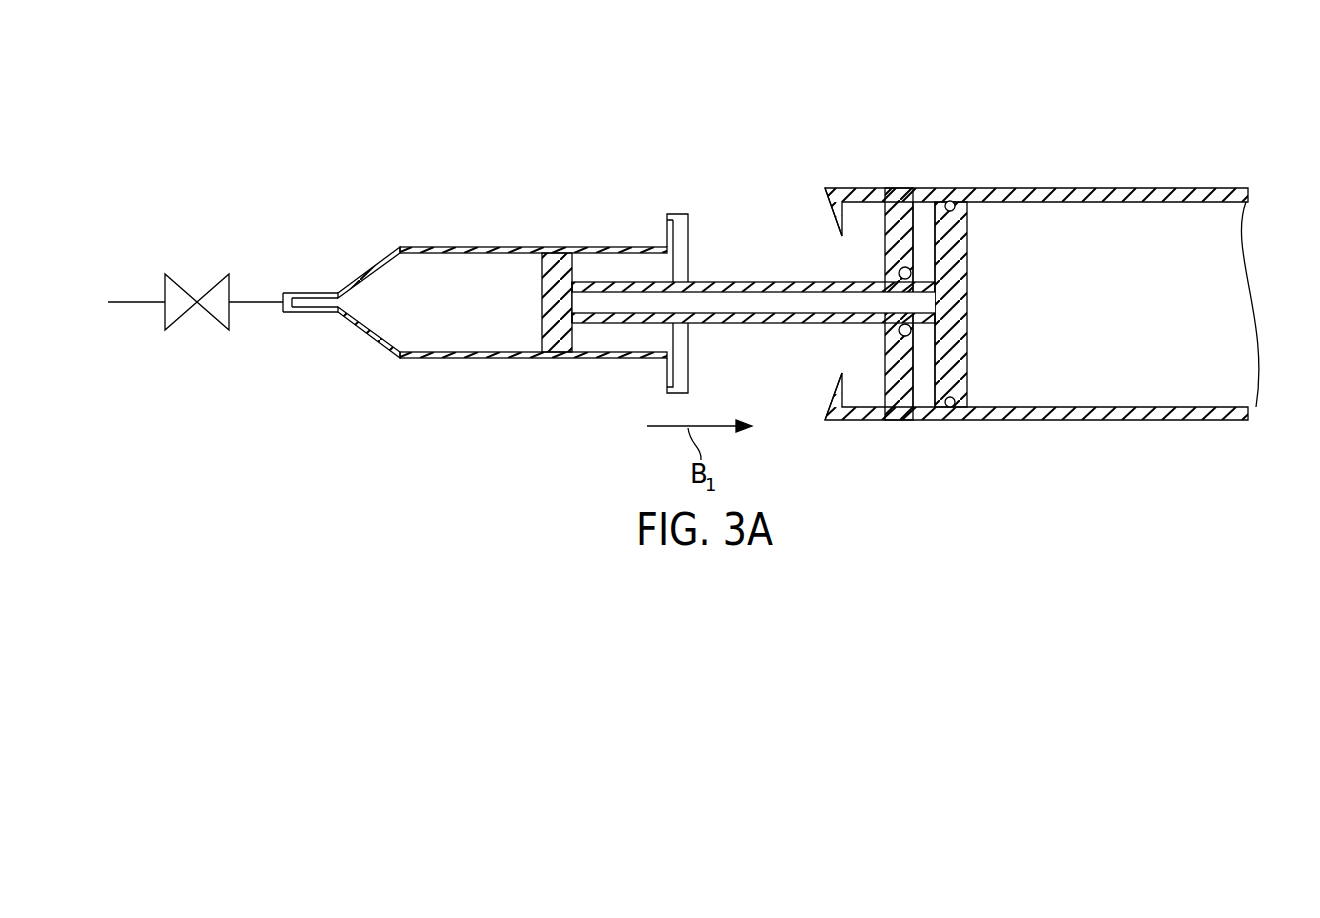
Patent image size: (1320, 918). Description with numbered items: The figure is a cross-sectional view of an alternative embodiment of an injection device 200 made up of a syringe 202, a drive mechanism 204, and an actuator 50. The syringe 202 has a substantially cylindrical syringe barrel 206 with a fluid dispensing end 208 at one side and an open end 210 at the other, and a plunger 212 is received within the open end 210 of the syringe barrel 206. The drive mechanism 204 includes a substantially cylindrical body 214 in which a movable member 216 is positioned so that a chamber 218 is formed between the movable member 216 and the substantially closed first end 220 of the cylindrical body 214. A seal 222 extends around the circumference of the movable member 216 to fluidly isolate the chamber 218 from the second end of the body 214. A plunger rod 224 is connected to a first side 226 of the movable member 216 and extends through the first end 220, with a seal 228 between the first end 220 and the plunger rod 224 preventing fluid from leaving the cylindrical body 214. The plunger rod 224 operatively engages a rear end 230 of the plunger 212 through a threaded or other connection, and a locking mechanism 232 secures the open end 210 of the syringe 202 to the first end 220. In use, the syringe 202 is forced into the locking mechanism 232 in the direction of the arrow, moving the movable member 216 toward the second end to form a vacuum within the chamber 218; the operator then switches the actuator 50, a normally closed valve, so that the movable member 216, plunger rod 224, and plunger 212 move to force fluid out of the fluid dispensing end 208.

The actuator 50 is at (197, 304).
The injection device 200 is at (798, 262).
The syringe 202 is at (520, 240).
The drive mechanism 204 is at (1041, 258).
The syringe barrel 206 is at (492, 247).
The fluid dispensing end 208 is at (320, 313).
The open end 210 is at (690, 232).
The plunger 212 is at (553, 272).
The cylindrical body 214 is at (1098, 188).
The movable member 216 is at (957, 275).
The chamber 218 is at (929, 202).
The first end 220 is at (893, 196).
The seal 222 is at (950, 407).
The plunger rod 224 is at (765, 303).
The first side 226 is at (935, 373).
The seal 228 is at (899, 271).
The rear end 230 is at (574, 284).
The locking mechanism 232 is at (850, 420).